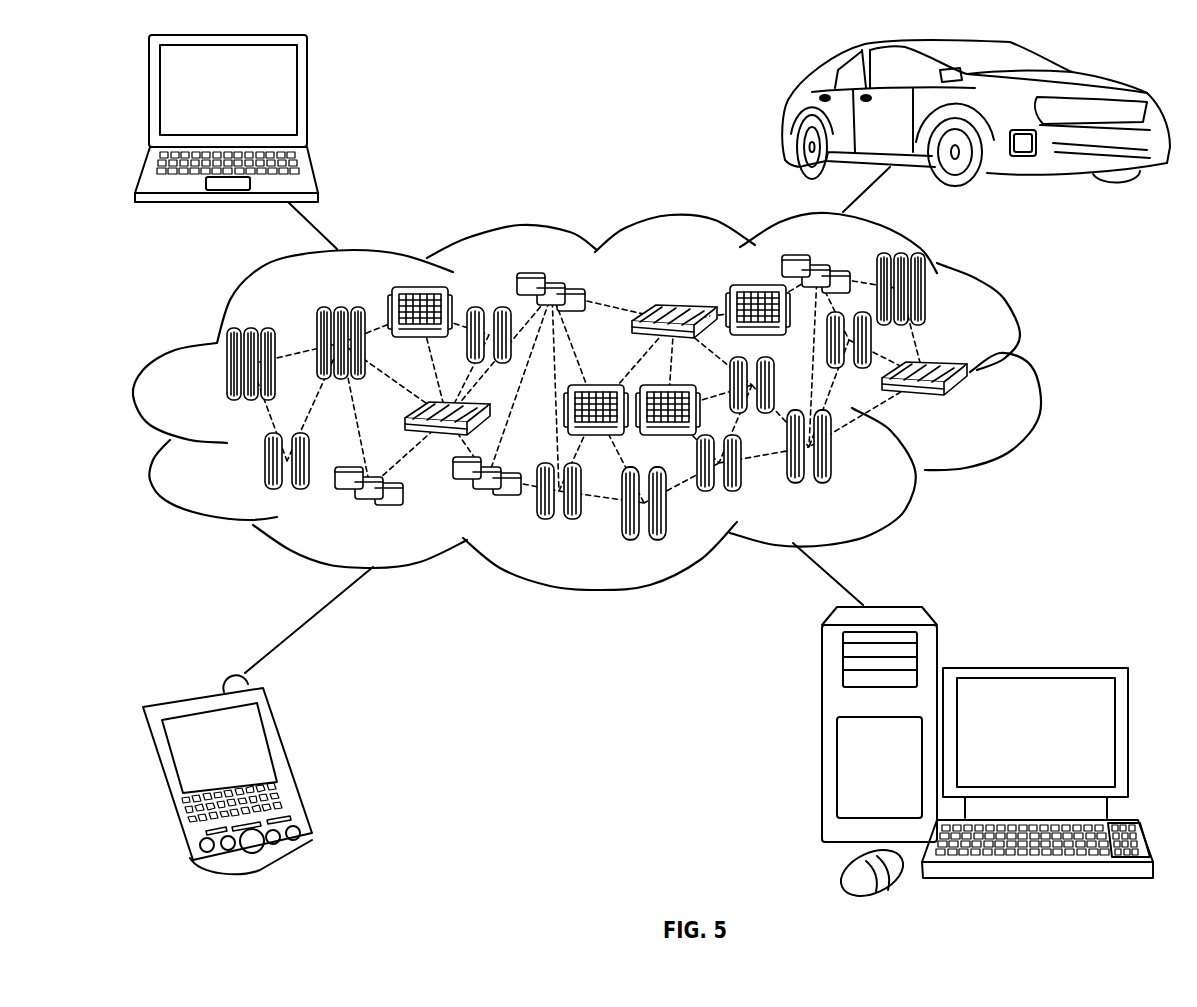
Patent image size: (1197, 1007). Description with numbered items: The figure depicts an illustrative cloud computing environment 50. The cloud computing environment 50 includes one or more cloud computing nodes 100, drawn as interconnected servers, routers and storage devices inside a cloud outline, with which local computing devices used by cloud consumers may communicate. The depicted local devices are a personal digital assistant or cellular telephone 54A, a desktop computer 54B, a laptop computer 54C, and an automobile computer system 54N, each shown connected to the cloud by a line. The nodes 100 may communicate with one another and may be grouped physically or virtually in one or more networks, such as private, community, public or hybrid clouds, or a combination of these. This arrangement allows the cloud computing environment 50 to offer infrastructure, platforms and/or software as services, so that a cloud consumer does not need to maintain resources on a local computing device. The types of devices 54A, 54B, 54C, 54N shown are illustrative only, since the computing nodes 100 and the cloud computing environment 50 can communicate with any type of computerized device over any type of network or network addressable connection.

The cloud computing environment 50 is at (1037, 372).
The cloud computing nodes 100 is at (975, 407).
The personal digital assistant or cellular telephone 54A is at (290, 760).
The desktop computer 54B is at (1035, 667).
The laptop computer 54C is at (307, 97).
The automobile computer system 54N is at (792, 113).